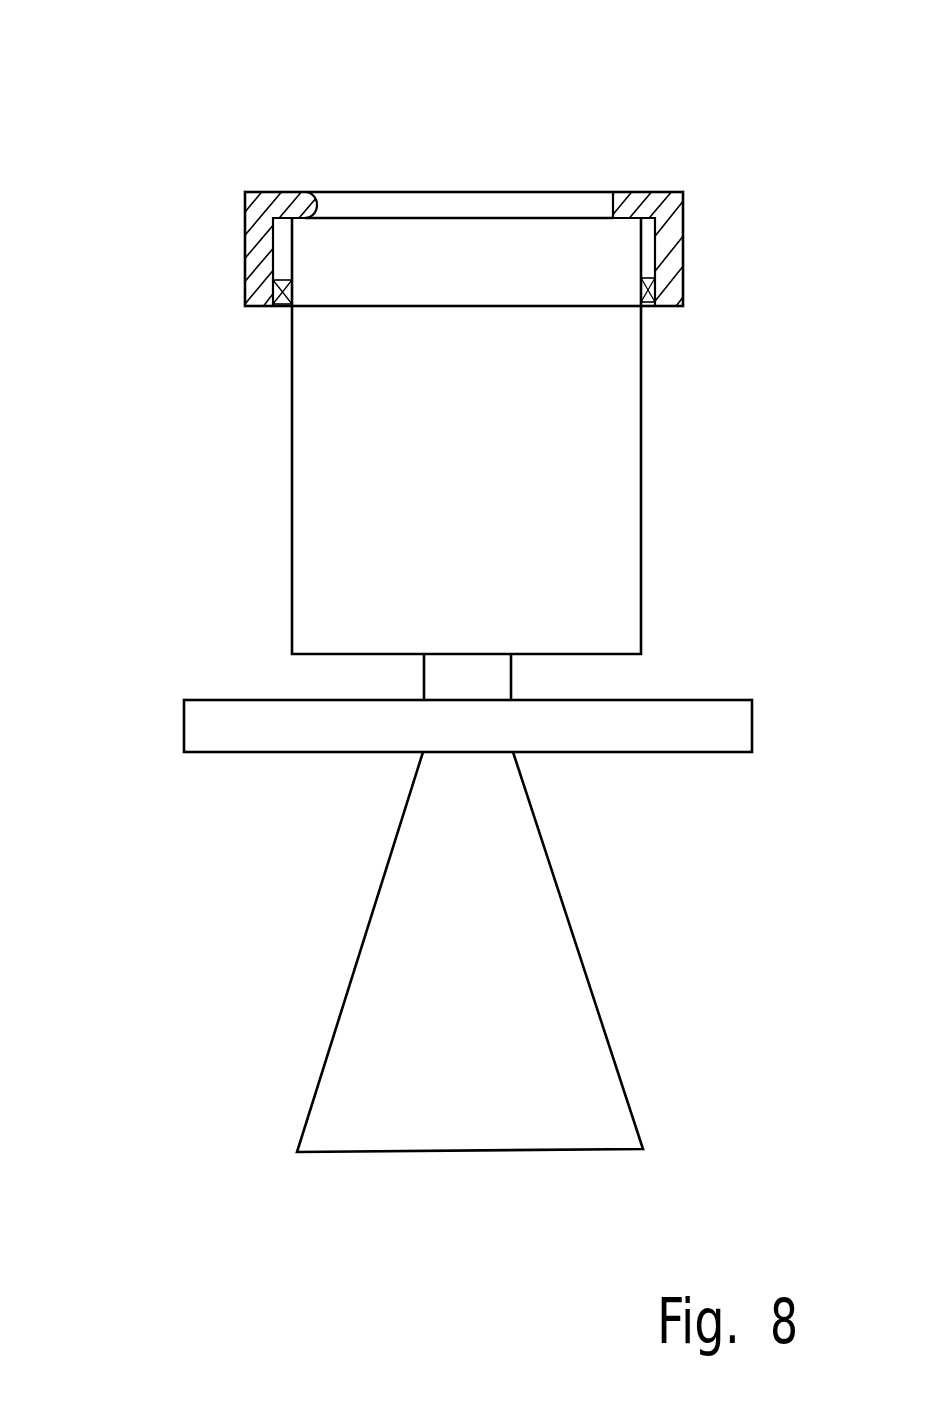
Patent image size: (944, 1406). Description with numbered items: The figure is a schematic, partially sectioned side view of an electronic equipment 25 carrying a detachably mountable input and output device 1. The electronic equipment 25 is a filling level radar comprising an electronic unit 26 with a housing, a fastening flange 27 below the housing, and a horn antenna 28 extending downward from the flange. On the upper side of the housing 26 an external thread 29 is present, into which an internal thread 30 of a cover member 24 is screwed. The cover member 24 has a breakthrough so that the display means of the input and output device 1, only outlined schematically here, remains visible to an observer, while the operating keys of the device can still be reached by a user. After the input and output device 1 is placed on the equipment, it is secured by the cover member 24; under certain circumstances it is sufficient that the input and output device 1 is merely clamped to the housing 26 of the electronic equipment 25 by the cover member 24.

The input and output device 1 is at (450, 242).
The cover member 24 is at (245, 222).
The electronic equipment 25 is at (260, 528).
The electronic unit 26 is at (588, 478).
The fastening flange 27 is at (288, 732).
The horn antenna 28 is at (397, 1015).
The external thread 29 is at (281, 308).
The internal thread 30 is at (645, 308).